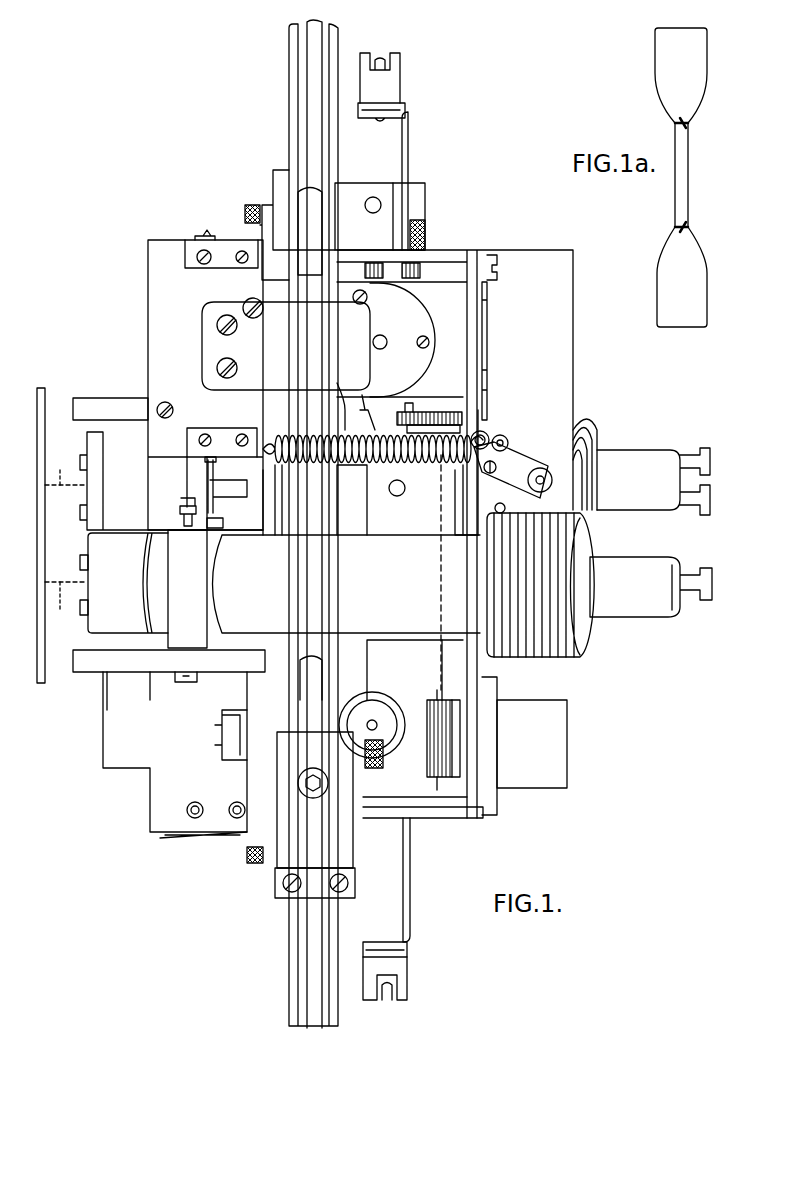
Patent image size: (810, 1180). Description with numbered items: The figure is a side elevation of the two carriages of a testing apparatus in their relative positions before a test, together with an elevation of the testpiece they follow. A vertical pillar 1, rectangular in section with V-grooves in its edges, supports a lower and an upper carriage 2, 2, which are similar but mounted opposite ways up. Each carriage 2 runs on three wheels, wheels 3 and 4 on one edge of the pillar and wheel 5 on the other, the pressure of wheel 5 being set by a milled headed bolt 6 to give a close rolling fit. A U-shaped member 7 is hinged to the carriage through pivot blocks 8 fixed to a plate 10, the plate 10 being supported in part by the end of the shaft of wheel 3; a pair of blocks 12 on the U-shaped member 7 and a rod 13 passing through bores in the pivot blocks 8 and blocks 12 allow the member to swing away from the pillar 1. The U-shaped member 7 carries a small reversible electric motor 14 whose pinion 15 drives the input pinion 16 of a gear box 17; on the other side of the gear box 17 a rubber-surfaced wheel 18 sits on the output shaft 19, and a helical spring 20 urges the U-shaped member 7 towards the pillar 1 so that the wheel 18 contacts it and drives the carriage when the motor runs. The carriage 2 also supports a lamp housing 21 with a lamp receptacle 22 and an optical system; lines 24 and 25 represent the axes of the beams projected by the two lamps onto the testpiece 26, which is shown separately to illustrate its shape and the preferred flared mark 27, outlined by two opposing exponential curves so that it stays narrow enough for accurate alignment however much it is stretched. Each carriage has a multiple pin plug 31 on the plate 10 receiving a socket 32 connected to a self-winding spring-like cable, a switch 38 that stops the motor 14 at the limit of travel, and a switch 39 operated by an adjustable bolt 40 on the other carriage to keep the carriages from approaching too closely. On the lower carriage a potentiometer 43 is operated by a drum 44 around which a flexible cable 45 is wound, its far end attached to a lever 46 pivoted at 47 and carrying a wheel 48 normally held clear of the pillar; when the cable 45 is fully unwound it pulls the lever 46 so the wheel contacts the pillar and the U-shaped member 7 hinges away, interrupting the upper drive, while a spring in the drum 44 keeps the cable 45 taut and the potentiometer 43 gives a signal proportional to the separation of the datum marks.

In FIG. 1, the vertical pillar 1 is at (289, 72).
In FIG. 1, the carriage 2 is at (248, 228).
In FIG. 1, the wheel 3 is at (312, 208).
In FIG. 1, the wheel 4 is at (290, 490).
In FIG. 1, the wheel 5 is at (310, 698).
In FIG. 1, the milled headed bolt 6 is at (305, 790).
In FIG. 1, the U-shaped member 7 is at (445, 252).
In FIG. 1, the pivot blocks 8 is at (347, 200).
In FIG. 1, the plate 10 is at (408, 135).
In FIG. 1, the blocks 12 is at (420, 212).
In FIG. 1, the rod 13 is at (381, 205).
In FIG. 1, the reversible electric motor 14 is at (412, 537).
In FIG. 1, the pinion 15 is at (415, 410).
In FIG. 1, the input pinion 16 is at (430, 420).
In FIG. 1, the gear box 17 is at (450, 333).
In FIG. 1, the wheel 18 is at (372, 708).
In FIG. 1, the output shaft 19 is at (366, 728).
In FIG. 1, the helical spring 20 is at (415, 462).
In FIG. 1, the lamp housing 21 is at (284, 589).
In FIG. 1, the lamp receptacle 22 is at (585, 440).
In FIG. 1, the line 24 is at (65, 462).
In FIG. 1, the line 25 is at (65, 611).
In FIG. 1, the testpiece 26 is at (42, 396).
In FIG. 1a, the testpiece 26 is at (690, 330).
In FIG. 1a, the flared mark 27 is at (675, 128).
In FIG. 1, the multiple pin plug 31 is at (388, 108).
In FIG. 1, the socket 32 is at (385, 78).
In FIG. 1, the switch 38 is at (195, 248).
In FIG. 1, the switch 39 is at (192, 452).
In FIG. 1, the adjustable bolt 40 is at (180, 510).
In FIG. 1, the potentiometer 43 is at (550, 790).
In FIG. 1, the drum 44 is at (445, 738).
In FIG. 1, the flexible cable 45 is at (441, 680).
In FIG. 1, the lever 46 is at (440, 482).
In FIG. 1, the pivot 47 is at (544, 480).
In FIG. 1, the wheel 48 is at (357, 408).